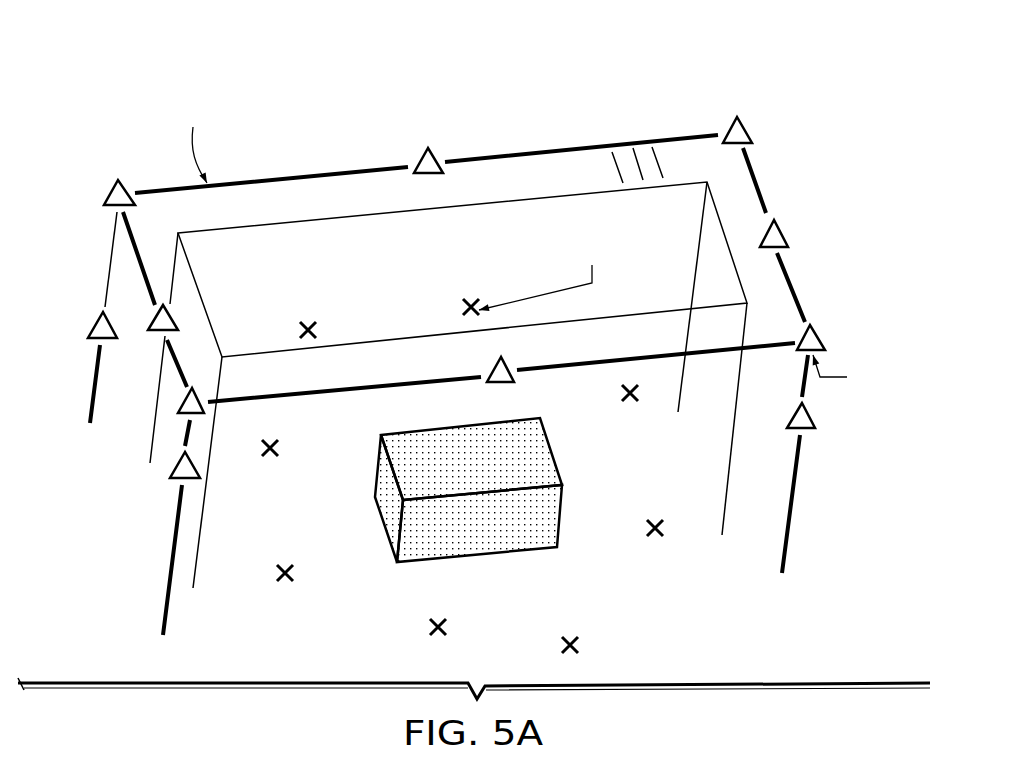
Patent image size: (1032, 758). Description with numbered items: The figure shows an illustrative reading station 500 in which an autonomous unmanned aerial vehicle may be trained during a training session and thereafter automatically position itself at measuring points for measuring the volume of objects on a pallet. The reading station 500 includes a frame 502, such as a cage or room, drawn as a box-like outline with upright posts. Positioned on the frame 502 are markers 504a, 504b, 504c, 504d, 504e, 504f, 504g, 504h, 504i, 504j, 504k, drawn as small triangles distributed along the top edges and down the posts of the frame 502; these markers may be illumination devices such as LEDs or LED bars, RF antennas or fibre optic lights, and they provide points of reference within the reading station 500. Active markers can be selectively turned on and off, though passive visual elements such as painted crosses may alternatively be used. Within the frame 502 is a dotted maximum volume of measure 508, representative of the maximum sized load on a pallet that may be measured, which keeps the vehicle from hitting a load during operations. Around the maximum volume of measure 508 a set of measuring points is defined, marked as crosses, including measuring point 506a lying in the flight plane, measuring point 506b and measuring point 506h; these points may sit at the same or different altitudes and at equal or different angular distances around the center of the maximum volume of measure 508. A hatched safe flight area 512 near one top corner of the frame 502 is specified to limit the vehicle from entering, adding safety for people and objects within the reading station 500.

The reading station 500 is at (367, 87).
The frame 502 is at (526, 152).
The marker 504a is at (113, 195).
The marker 504b is at (422, 163).
The marker 504c is at (746, 128).
The marker 504d is at (97, 327).
The marker 504e is at (152, 317).
The marker 504f is at (180, 402).
The marker 504g is at (177, 478).
The marker 504h is at (517, 375).
The marker 504i is at (783, 233).
The marker 504j is at (822, 333).
The marker 504k is at (807, 430).
The measuring point 506a is at (471, 302).
The measuring point 506b is at (634, 402).
The measuring point 506h is at (308, 324).
The maximum volume of measure 508 is at (557, 520).
The safe flight area 512 is at (668, 157).